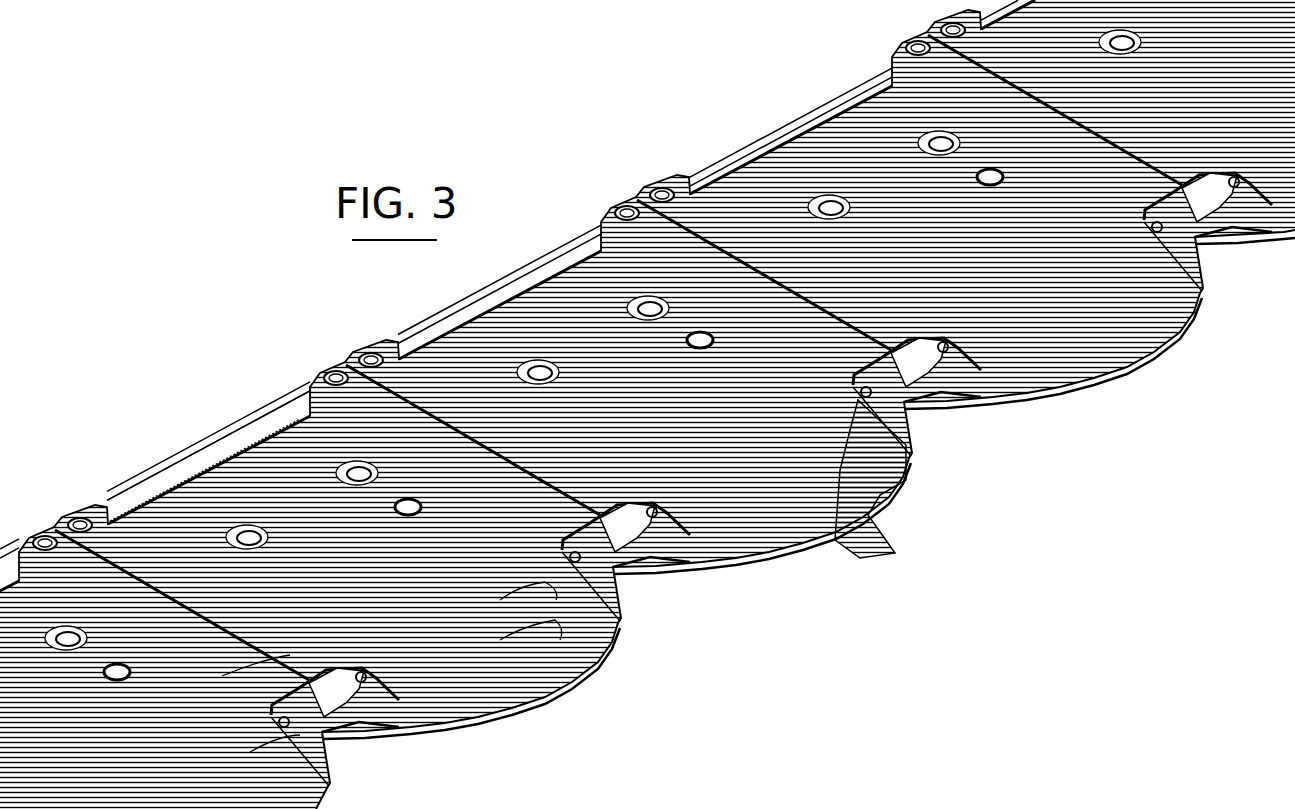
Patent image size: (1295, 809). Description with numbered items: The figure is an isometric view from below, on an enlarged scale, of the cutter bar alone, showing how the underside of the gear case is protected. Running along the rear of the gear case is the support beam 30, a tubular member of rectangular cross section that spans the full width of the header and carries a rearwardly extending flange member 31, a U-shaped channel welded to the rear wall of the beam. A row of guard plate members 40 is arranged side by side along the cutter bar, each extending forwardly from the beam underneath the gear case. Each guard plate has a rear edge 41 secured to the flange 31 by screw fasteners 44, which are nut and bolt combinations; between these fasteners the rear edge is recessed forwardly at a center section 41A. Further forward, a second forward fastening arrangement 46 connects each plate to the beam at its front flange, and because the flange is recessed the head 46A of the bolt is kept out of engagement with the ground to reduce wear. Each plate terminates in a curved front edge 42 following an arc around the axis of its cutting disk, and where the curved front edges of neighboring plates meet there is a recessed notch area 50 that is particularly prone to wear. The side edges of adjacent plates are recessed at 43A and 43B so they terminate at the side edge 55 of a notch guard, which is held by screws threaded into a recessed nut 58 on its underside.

The support beam 30 is at (340, 372).
The rearwardly extending flange member 31 is at (298, 412).
The guard plate members 40 is at (228, 488).
The rear edge 41 is at (262, 447).
The center section 41A is at (240, 458).
The curved front edge 42 is at (552, 690).
The recess 43A is at (500, 638).
The recess 43B is at (498, 602).
The screw fasteners 44 is at (376, 356).
The second forward fastening arrangement 46 is at (285, 543).
The head 46A is at (368, 487).
The recessed notch area 50 is at (362, 745).
The side edge 55 is at (250, 752).
The recessed nut 58 is at (222, 676).